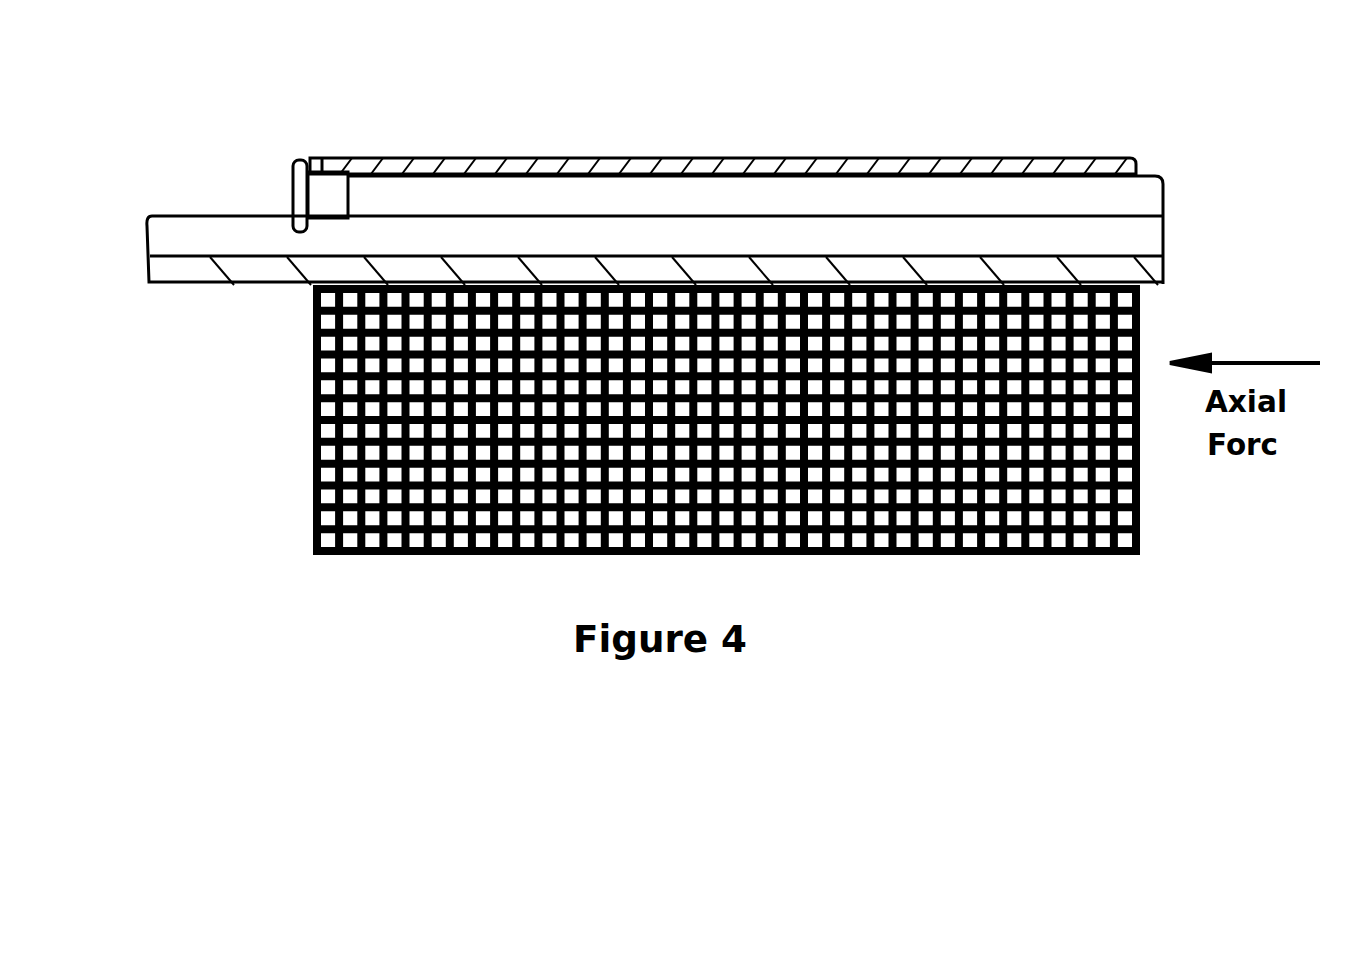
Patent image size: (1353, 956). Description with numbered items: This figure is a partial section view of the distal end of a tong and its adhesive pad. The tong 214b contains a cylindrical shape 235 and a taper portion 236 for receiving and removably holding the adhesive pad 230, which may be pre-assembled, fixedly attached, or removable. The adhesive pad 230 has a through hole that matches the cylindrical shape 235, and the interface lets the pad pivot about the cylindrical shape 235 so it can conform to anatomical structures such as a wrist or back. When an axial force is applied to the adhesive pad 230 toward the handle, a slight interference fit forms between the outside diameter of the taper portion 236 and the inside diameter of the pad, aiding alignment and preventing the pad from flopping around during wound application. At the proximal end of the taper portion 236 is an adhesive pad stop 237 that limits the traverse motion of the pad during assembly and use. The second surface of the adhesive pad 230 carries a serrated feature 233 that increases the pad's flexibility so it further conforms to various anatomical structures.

The tong 214b is at (1168, 195).
The cylindrical shape 235 is at (623, 188).
The taper portion 236 is at (322, 158).
The adhesive pad stop 237 is at (295, 162).
The serrated feature 233 is at (1143, 492).
The adhesive pad 230 is at (802, 501).